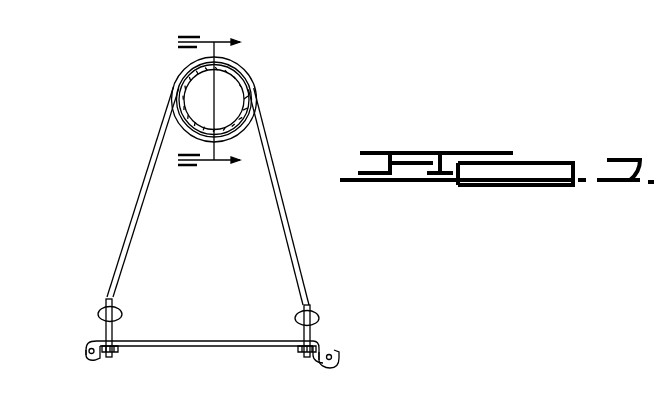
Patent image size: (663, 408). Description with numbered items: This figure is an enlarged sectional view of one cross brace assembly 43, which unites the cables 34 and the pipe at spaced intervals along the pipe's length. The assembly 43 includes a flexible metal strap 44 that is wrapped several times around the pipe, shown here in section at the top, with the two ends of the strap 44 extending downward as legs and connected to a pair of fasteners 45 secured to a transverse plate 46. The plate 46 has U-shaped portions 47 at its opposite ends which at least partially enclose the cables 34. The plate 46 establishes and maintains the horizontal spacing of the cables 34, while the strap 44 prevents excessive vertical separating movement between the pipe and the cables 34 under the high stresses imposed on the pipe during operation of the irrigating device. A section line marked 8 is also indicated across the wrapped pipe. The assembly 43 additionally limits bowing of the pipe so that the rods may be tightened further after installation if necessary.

The section line 8- 8 is at (209, 101).
The cables 34 is at (92, 345).
The cross brace assembly 43 is at (275, 168).
The flexible metal strap 44 is at (292, 243).
The fasteners 45 is at (113, 333).
The transverse plate 46 is at (187, 346).
The U-shaped portions 47 is at (96, 362).